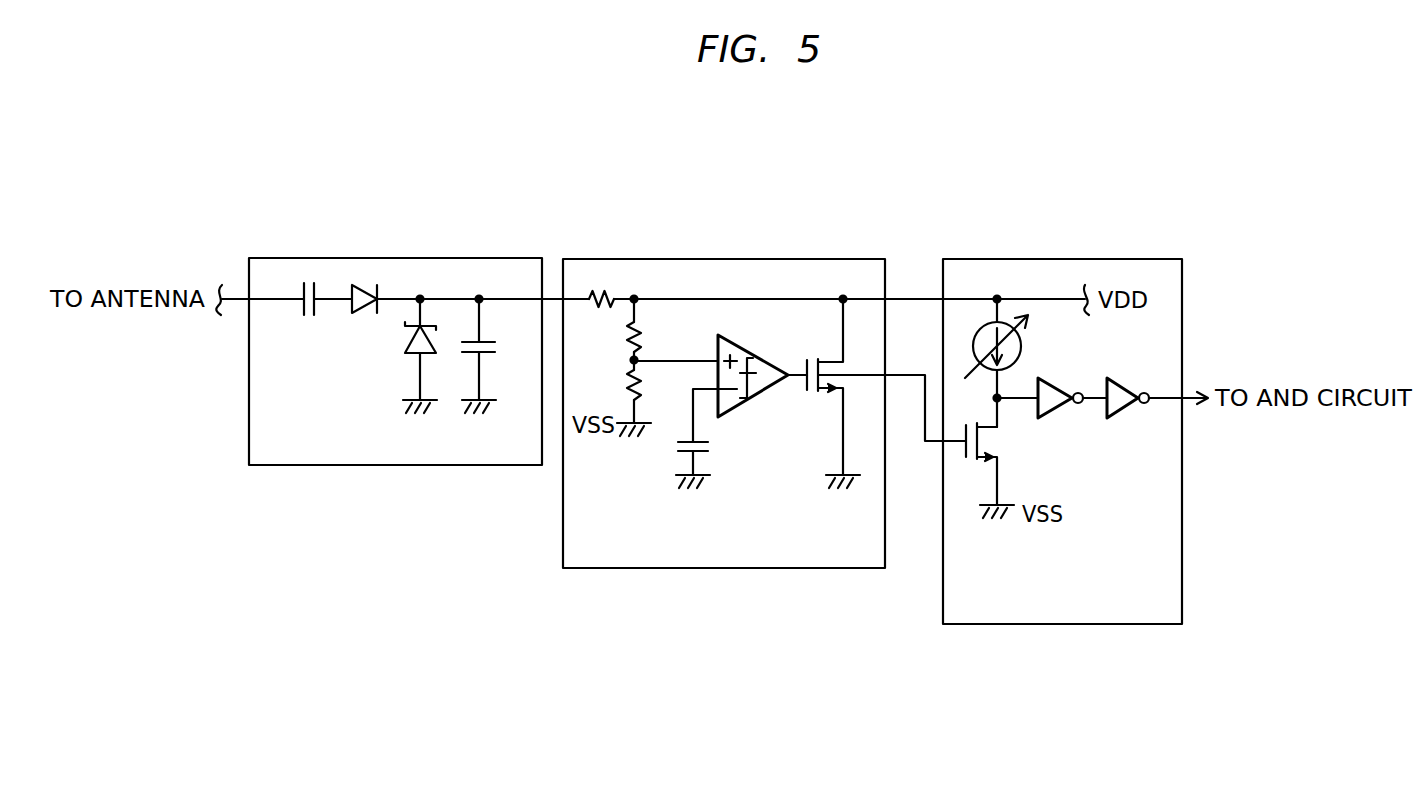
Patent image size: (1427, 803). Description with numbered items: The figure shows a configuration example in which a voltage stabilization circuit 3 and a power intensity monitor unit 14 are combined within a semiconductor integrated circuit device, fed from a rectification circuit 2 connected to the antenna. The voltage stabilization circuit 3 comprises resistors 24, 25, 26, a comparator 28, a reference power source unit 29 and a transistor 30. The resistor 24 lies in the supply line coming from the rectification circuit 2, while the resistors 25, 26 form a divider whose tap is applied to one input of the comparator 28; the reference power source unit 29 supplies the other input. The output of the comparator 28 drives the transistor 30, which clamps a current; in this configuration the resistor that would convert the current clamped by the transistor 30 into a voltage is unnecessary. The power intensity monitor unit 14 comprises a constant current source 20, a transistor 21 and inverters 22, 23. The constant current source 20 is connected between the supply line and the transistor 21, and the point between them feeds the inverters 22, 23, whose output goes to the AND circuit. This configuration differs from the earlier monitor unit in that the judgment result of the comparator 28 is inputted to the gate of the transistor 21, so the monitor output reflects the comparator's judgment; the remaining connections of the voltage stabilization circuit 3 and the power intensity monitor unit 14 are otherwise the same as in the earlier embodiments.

The rectification circuit 2 is at (521, 258).
The voltage stabilization circuit 3 is at (863, 259).
The power intensity monitor unit 14 is at (1140, 259).
The constant current source 20 is at (1021, 341).
The transistor 21 is at (992, 452).
The inverter 22 is at (1060, 383).
The inverter 23 is at (1122, 410).
The resistor 24 is at (609, 292).
The resistor 25 is at (641, 325).
The resistor 26 is at (641, 385).
The comparator 28 is at (740, 343).
The reference power source unit 29 is at (705, 444).
The transistor 30 is at (818, 358).